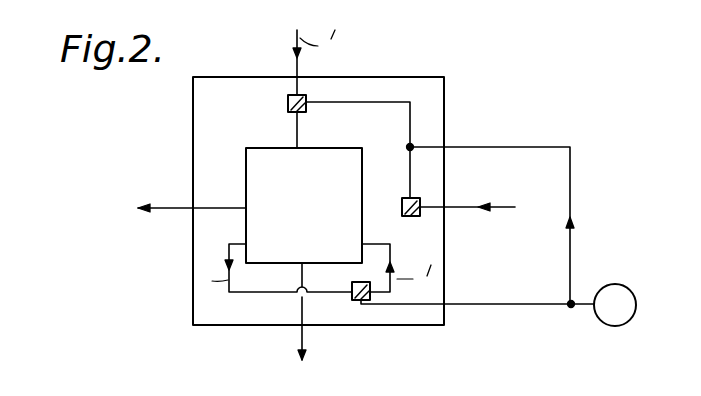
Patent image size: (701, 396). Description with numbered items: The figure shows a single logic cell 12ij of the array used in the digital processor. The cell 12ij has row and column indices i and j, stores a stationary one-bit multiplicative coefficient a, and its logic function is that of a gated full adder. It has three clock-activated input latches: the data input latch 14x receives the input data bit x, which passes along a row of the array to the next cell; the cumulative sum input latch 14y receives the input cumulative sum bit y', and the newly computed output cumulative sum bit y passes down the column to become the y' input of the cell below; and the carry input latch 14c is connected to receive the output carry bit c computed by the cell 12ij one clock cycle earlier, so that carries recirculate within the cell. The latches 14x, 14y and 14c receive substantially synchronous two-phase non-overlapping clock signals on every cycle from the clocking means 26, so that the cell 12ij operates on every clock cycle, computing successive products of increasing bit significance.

The logic cell 12ij is at (444, 100).
The cumulative sum input latch 14y is at (288, 96).
The data input latch 14x is at (420, 214).
The carry input latch 14c is at (361, 301).
The clocking means 26 is at (598, 319).